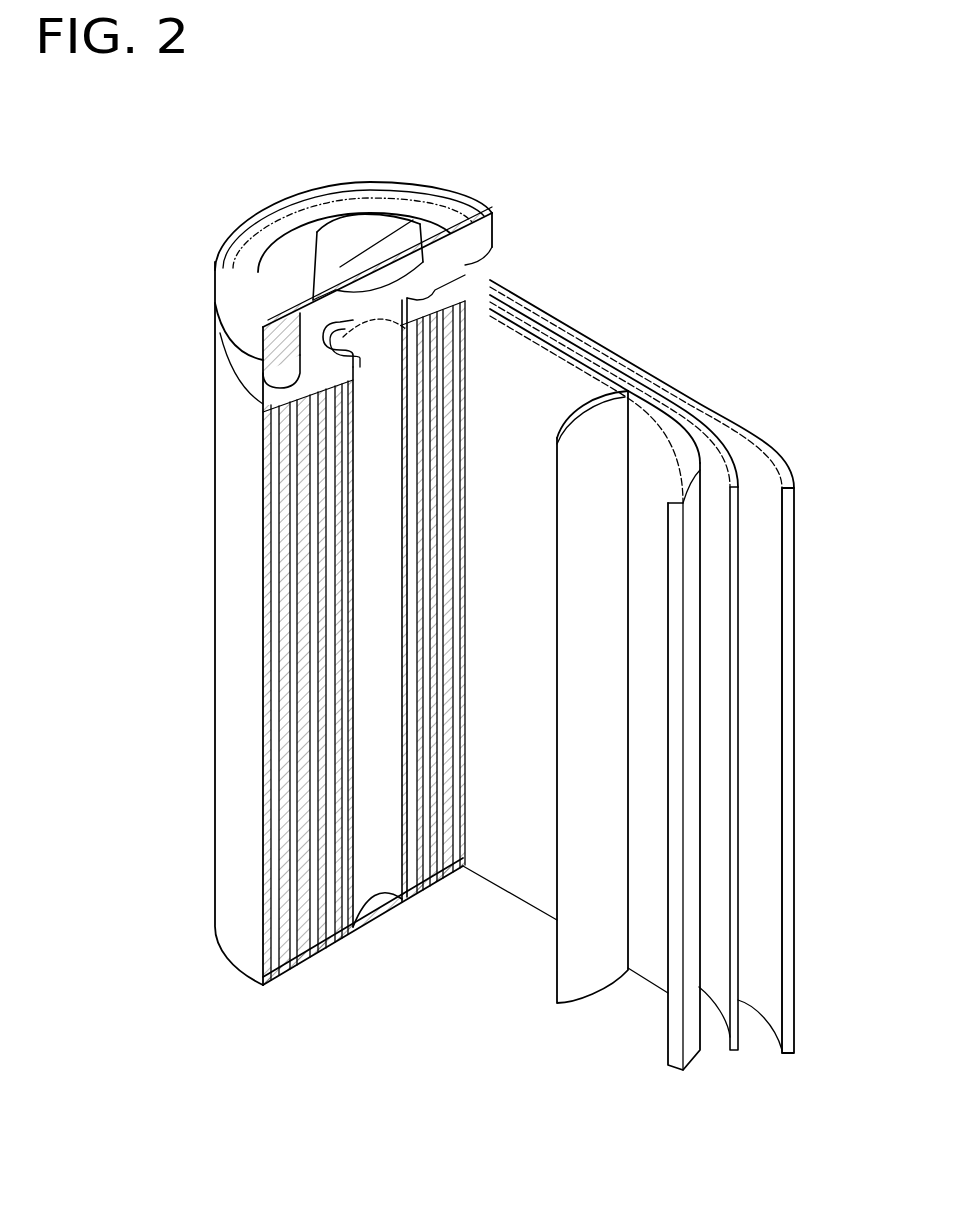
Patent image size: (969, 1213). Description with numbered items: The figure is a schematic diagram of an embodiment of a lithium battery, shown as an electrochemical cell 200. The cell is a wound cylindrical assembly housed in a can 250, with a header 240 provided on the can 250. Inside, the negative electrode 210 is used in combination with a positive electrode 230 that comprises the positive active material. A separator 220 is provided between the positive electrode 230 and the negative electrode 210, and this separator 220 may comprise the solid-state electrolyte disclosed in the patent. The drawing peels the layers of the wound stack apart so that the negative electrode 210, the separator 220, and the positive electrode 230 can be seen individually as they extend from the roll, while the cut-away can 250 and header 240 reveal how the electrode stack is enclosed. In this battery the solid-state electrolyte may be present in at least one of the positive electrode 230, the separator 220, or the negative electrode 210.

The electrochemical cell 200 is at (692, 207).
The negative electrode 210 is at (780, 467).
The separator 220 is at (565, 358).
The positive electrode 230 is at (653, 413).
The header 240 is at (352, 227).
The can 250 is at (227, 627).